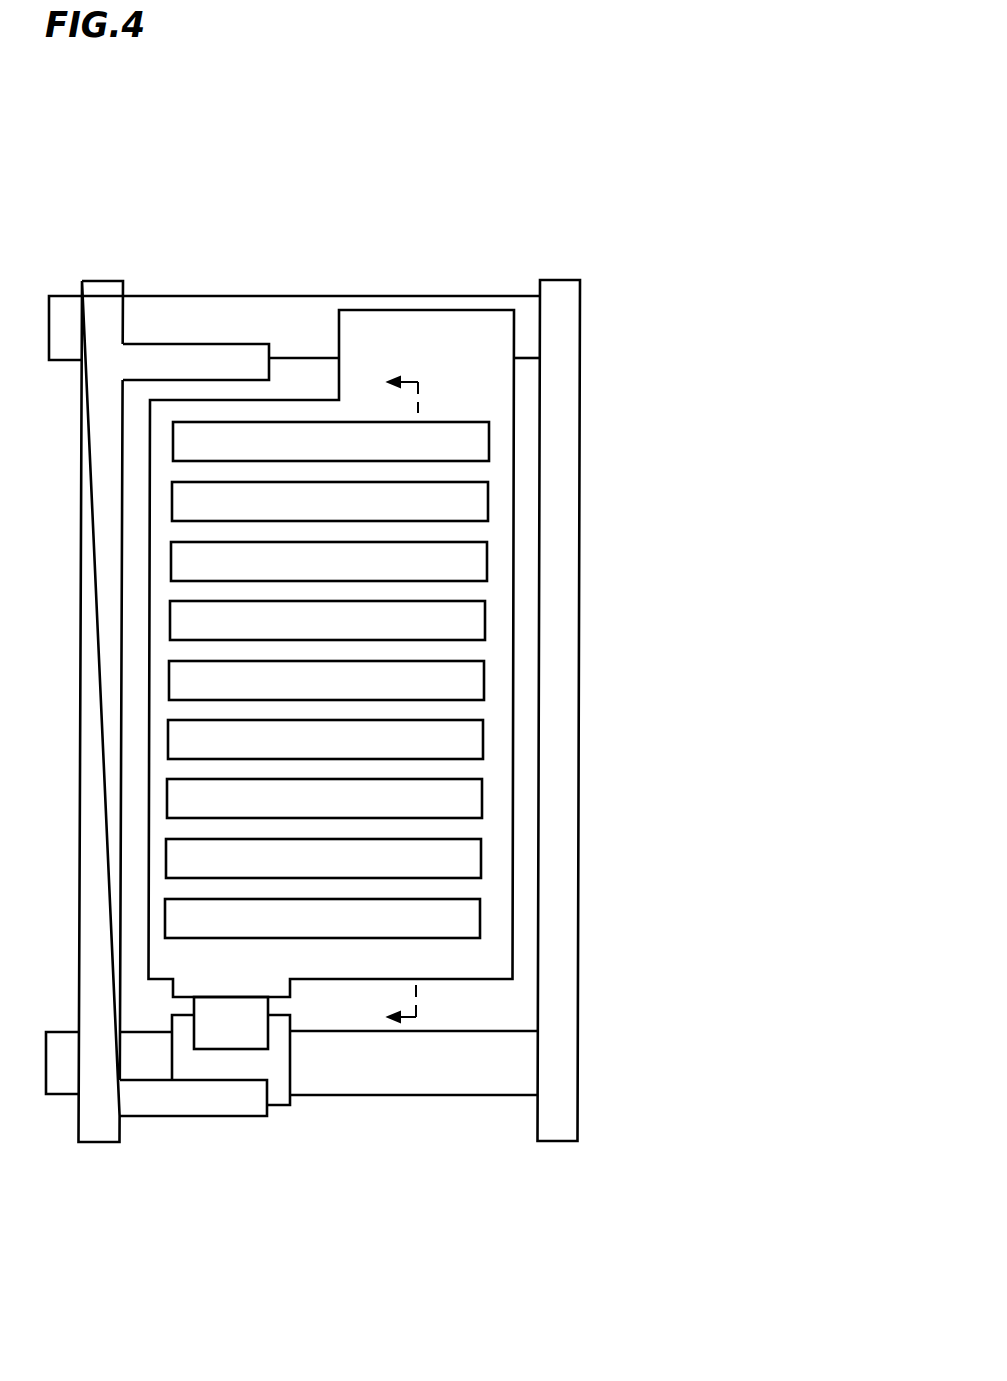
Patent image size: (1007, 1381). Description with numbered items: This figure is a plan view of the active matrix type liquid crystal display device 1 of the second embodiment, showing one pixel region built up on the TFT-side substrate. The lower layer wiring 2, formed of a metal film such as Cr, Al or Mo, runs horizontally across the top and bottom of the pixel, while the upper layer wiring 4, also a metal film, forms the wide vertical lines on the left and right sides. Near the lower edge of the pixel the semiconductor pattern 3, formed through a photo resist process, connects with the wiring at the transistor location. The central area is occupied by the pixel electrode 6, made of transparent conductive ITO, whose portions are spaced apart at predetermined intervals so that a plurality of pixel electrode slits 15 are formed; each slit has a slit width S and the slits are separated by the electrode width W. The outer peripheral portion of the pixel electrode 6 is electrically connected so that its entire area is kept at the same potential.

The active matrix type liquid crystal display device 1 is at (603, 296).
The lower layer wiring 2 is at (247, 312).
The semiconductor pattern 3 is at (277, 1105).
The upper layer wiring 4 is at (105, 292).
The pixel electrode 6 is at (380, 320).
The pixel electrode slit 15 is at (448, 483).